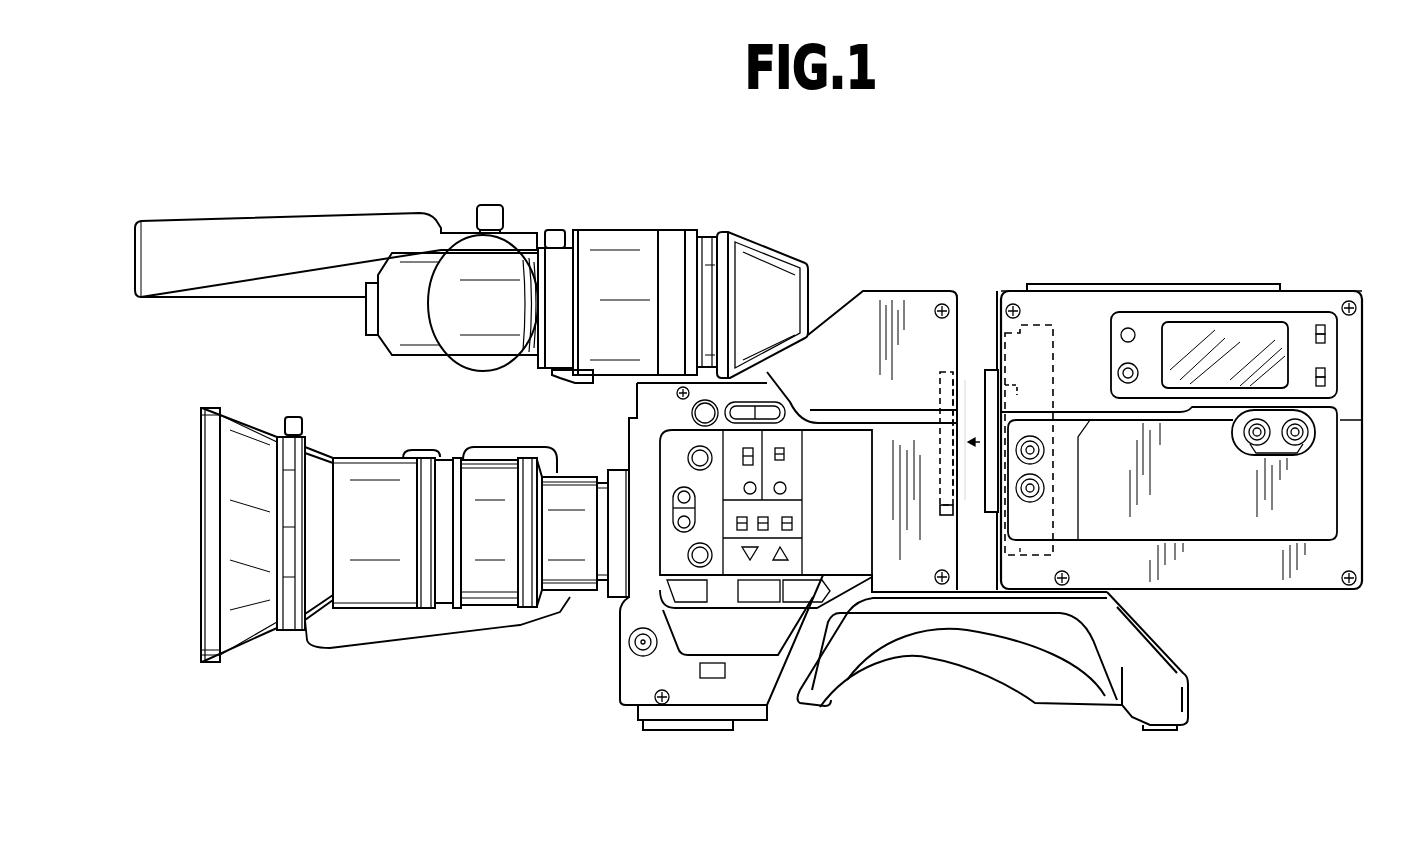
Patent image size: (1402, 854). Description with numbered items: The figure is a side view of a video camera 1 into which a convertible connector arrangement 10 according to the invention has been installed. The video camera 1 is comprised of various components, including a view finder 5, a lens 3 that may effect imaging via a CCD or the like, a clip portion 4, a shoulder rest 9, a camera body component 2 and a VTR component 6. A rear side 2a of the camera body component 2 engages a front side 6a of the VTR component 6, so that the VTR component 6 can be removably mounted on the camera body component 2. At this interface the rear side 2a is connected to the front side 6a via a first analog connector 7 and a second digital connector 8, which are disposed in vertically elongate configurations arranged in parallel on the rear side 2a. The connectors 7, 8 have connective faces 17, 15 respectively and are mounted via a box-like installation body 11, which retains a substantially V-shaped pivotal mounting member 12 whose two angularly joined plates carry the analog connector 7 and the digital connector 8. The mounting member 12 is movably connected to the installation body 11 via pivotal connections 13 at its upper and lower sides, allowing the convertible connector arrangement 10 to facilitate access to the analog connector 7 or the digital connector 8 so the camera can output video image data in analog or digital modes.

The video camera 1 is at (858, 688).
The camera body component 2 is at (880, 290).
The rear side of the camera body component 2a is at (958, 325).
The lens 3 is at (375, 587).
The clip portion 4 is at (468, 620).
The view finder 5 is at (628, 258).
The VTR component 6 is at (1318, 293).
The front side of the VTR component 6a is at (1000, 322).
The analog connector 7 is at (948, 515).
The digital connector 8 is at (955, 512).
The shoulder rest 9 is at (1153, 648).
The convertible connector arrangement 10 is at (1063, 365).
The installation body 11 is at (1018, 390).
The pivotal mounting member 12 is at (1000, 348).
The pivotal connection 13 is at (1020, 330).
The connective face 15 is at (992, 512).
The connective face 17 is at (1040, 327).